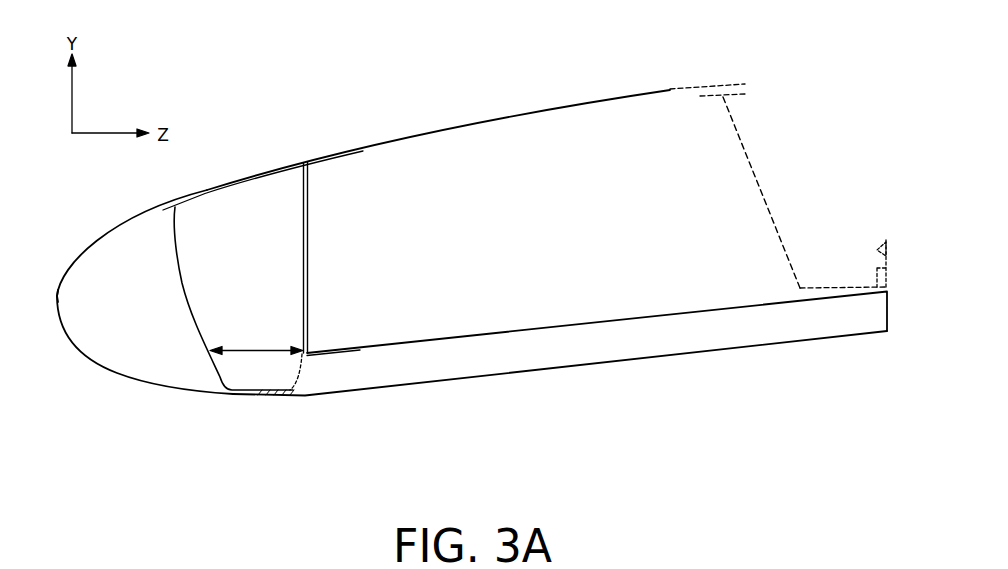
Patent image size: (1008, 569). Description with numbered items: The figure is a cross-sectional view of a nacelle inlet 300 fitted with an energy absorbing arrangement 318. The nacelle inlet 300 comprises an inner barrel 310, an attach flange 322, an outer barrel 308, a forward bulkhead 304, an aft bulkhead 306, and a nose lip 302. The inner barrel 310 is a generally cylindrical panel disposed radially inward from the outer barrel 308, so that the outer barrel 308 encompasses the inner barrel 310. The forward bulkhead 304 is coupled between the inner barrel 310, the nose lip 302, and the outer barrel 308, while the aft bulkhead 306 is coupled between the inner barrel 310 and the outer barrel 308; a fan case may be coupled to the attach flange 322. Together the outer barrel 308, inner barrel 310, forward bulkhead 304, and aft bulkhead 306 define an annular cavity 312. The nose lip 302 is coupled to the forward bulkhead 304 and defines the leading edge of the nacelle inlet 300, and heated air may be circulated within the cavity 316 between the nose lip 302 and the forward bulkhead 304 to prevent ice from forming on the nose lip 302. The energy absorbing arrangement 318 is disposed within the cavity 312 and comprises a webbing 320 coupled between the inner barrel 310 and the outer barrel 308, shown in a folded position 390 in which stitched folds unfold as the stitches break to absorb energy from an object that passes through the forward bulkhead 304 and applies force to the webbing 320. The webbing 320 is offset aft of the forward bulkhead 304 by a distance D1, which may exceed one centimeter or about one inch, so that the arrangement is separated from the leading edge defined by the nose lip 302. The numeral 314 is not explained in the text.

The nacelle inlet 300 is at (495, 77).
The nose lip 302 is at (73, 347).
The forward bulkhead 304 is at (187, 287).
The aft bulkhead 306 is at (765, 192).
The outer barrel 308 is at (423, 134).
The inner barrel 310 is at (383, 380).
The cavity 312 is at (507, 275).
The nose tip 314 is at (57, 293).
The cavity 316 is at (118, 295).
The energy absorbing arrangement 318 is at (477, 183).
The webbing 320 is at (308, 275).
The attach flange 322 is at (880, 270).
The folded position 390 is at (363, 282).
The distance D1 is at (253, 352).